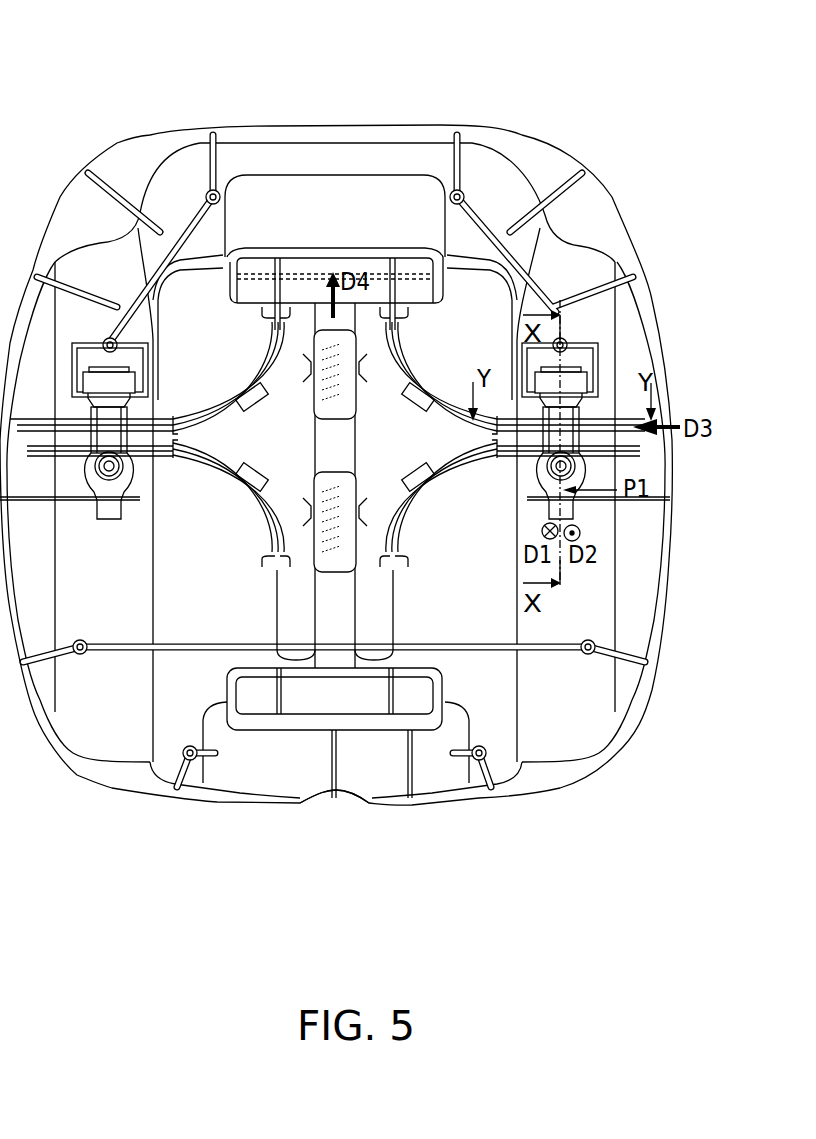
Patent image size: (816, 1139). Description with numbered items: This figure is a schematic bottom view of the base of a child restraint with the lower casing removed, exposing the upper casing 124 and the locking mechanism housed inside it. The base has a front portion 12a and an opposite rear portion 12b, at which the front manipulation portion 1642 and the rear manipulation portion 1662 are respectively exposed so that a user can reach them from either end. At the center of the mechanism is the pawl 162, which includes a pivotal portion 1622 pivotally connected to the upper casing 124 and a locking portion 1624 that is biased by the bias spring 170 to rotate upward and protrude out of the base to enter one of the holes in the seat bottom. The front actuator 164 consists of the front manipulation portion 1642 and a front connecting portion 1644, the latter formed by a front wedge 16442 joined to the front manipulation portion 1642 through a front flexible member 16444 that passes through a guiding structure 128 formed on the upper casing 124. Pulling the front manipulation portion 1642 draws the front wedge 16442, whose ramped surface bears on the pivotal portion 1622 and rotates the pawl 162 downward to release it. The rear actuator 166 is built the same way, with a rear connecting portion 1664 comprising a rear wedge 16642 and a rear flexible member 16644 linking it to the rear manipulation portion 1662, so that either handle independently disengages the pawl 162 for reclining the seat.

The front portion 12a is at (243, 128).
The rear portion 12b is at (217, 803).
The upper casing 124 is at (577, 722).
The guiding structure 128 is at (419, 394).
The pawl 162 is at (657, 459).
The pivotal portion 1622 is at (568, 426).
The locking portion 1624 is at (568, 508).
The bias spring 170 is at (572, 443).
The front actuator 164 is at (340, 338).
The front manipulation portion 1642 is at (315, 258).
The front connecting portion 1644 is at (340, 232).
The front wedge 16442 is at (597, 440).
The front flexible member 16444 is at (442, 408).
The rear actuator 166 is at (381, 682).
The rear manipulation portion 1662 is at (324, 720).
The rear connecting portion 1664 is at (381, 682).
The rear wedge 16642 is at (517, 697).
The rear flexible member 16644 is at (452, 703).